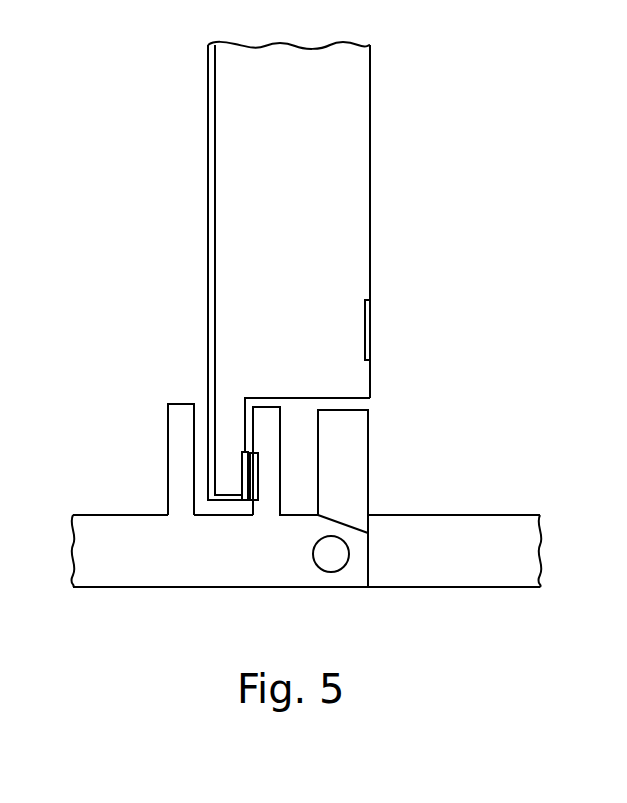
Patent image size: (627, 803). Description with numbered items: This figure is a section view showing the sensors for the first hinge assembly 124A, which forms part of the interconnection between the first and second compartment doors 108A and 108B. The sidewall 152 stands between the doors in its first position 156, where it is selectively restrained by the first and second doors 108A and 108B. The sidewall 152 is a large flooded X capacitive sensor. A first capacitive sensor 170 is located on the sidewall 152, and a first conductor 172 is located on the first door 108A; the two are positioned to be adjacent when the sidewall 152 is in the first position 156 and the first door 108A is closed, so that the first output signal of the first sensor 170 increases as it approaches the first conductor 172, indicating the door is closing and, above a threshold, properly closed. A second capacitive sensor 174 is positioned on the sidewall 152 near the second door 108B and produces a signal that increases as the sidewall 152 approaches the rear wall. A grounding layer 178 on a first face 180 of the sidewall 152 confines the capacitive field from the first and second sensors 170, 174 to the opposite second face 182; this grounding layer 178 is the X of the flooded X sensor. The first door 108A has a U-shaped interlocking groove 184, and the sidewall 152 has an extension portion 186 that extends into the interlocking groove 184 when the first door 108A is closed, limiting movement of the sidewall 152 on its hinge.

The sidewall 152 is at (370, 133).
The first position 156 is at (180, 193).
The first capacitive sensor 170 is at (242, 485).
The first conductor 172 is at (260, 478).
The second capacitive sensor 174 is at (370, 330).
The grounding layer 178 is at (215, 310).
The first face 180 is at (207, 273).
The second face 182 is at (370, 216).
The interlocking groove 184 is at (160, 465).
The extension portion 186 is at (228, 457).
The first compartment door 108A is at (153, 587).
The second compartment door 108B is at (475, 587).
The first hinge assembly 124A is at (350, 603).